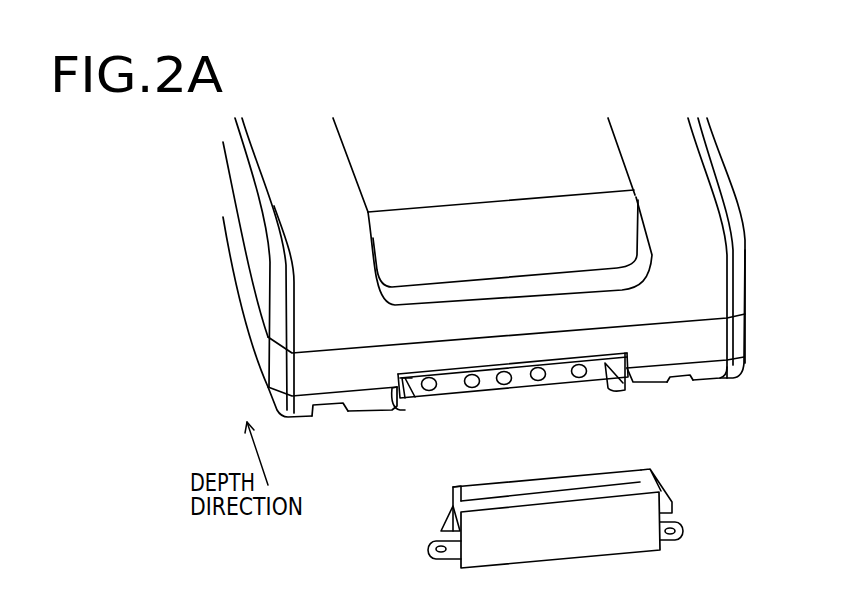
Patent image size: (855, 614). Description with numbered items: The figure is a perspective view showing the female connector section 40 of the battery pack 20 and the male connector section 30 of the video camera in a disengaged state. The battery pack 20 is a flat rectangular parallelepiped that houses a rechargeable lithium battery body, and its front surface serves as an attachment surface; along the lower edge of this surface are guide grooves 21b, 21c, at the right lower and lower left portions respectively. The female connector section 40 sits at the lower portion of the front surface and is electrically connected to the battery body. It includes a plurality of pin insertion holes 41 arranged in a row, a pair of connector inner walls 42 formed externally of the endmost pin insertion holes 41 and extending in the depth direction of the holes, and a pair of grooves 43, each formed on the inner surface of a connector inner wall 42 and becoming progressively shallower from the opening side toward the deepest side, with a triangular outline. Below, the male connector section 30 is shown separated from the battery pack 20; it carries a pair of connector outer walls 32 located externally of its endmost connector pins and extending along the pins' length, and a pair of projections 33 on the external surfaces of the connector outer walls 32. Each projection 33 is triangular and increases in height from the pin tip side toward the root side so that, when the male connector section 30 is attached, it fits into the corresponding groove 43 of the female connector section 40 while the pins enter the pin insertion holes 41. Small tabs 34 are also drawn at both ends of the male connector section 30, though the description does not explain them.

The battery pack 20 is at (517, 133).
The guide groove 21b is at (333, 412).
The guide groove 21c is at (690, 376).
The male connector section 30 is at (573, 550).
The connector outer wall 32 is at (441, 529).
The projection 33 is at (449, 517).
The mounting tab 34 is at (437, 559).
The female connector section 40 is at (523, 380).
The pin insertion hole 41 is at (472, 389).
The connector inner wall 42 is at (608, 393).
The groove 43 is at (410, 389).